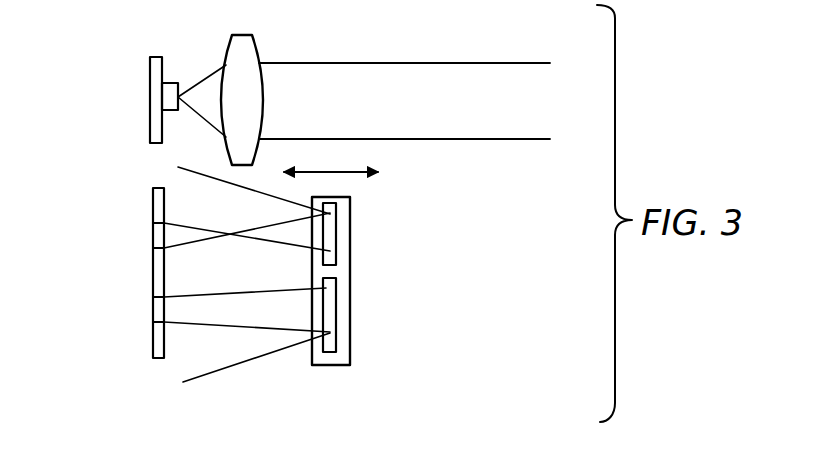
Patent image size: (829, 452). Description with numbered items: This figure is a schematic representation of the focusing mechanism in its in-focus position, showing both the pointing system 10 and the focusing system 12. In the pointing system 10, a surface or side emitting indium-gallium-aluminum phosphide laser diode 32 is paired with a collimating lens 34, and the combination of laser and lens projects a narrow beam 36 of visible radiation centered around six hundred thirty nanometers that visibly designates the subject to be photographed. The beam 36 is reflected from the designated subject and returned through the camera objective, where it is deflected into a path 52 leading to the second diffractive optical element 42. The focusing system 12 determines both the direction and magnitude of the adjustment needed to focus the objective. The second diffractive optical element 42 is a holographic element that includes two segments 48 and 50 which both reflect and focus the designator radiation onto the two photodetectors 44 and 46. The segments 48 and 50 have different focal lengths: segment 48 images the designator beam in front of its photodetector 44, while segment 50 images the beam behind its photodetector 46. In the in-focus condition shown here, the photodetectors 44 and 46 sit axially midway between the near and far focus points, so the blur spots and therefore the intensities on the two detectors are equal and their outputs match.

The pointing system 10 is at (326, 43).
The focusing system 12 is at (217, 387).
The laser diode 32 is at (170, 83).
The collimating lens 34 is at (258, 52).
The narrow beam 36 is at (477, 63).
The second diffractive optical element 42 is at (340, 365).
The first photodetector 44 is at (153, 235).
The second photodetector 46 is at (153, 313).
The first segment 48 is at (336, 237).
The second segment 50 is at (337, 312).
The path 52 is at (288, 348).